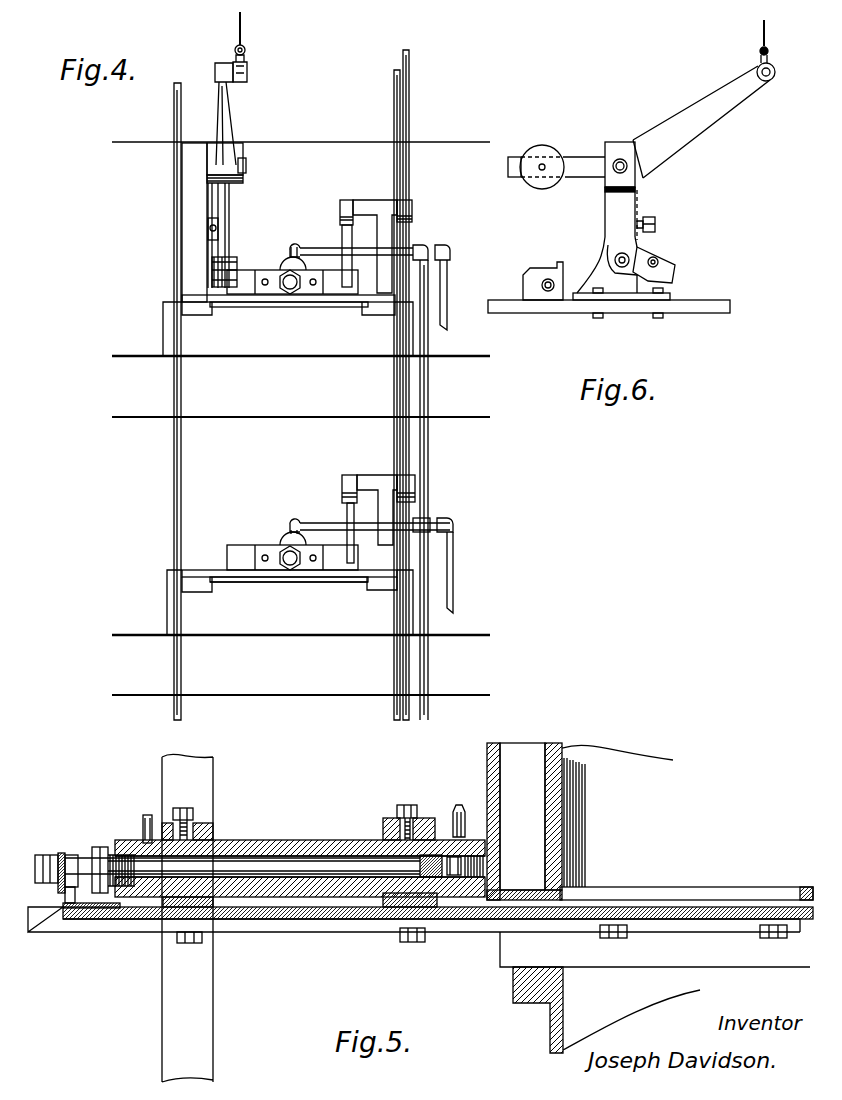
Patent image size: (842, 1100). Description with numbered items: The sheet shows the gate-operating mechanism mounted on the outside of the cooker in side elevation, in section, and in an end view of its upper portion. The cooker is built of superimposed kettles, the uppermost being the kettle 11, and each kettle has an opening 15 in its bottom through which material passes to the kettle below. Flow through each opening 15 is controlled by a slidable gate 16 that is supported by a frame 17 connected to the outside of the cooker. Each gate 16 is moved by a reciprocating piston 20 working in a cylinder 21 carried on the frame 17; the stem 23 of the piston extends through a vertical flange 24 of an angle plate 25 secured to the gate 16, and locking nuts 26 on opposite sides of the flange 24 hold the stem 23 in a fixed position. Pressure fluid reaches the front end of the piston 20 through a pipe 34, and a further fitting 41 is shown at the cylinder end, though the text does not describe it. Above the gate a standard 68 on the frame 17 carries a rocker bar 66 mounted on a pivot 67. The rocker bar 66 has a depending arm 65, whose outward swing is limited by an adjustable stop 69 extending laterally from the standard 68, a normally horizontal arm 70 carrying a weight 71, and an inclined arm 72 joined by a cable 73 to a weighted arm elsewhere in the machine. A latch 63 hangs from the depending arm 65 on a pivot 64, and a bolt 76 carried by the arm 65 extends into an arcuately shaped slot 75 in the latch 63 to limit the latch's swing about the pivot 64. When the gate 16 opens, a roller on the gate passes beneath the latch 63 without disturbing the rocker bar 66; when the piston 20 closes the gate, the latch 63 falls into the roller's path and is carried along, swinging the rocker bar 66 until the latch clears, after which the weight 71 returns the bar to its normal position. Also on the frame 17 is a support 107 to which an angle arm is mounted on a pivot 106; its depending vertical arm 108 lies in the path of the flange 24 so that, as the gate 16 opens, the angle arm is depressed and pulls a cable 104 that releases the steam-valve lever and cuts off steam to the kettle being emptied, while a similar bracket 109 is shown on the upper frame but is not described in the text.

In FIG. 5, the kettle 11 is at (556, 746).
In FIG. 5, the opening 15 is at (681, 888).
In FIG. 4, the slidable gate 16 is at (310, 583).
In FIG. 5, the slidable gate 16 is at (355, 908).
In FIG. 6, the slidable gate 16 is at (609, 309).
In FIG. 4, the frame 17 is at (192, 306).
In FIG. 5, the reciprocating piston 20 is at (400, 863).
In FIG. 5, the cylinder 21 is at (285, 840).
In FIG. 5, the piston stem 23 is at (80, 858).
In FIG. 4, the vertical flange 24 is at (263, 270).
In FIG. 5, the vertical flange 24 is at (64, 903).
In FIG. 6, the vertical flange 24 is at (550, 268).
In FIG. 5, the angle plate 25 is at (96, 918).
In FIG. 5, the locking nuts 26 is at (42, 853).
In FIG. 5, the pipe 34 is at (146, 818).
In FIG. 5, the pin 41 is at (462, 805).
In FIG. 6, the latch 63 is at (670, 268).
In FIG. 6, the pivot 64 is at (613, 260).
In FIG. 6, the depending arm 65 is at (600, 192).
In FIG. 6, the rocker bar 66 is at (656, 137).
In FIG. 6, the pivot 67 is at (620, 156).
In FIG. 4, the standard 68 is at (196, 208).
In FIG. 4, the adjustable stop 69 is at (208, 228).
In FIG. 6, the adjustable stop 69 is at (656, 223).
In FIG. 6, the horizontal arm 70 is at (512, 180).
In FIG. 6, the weight 71 is at (545, 148).
In FIG. 4, the inclined arm 72 is at (231, 122).
In FIG. 6, the inclined arm 72 is at (733, 68).
In FIG. 4, the cable 73 is at (243, 42).
In FIG. 6, the cable 73 is at (770, 36).
In FIG. 6, the arcuately shaped slot 75 is at (653, 282).
In FIG. 6, the bolt 76 is at (654, 255).
In FIG. 4, the cable 104 is at (414, 445).
In FIG. 4, the pivot 106 is at (416, 487).
In FIG. 4, the support 107 is at (386, 240).
In FIG. 4, the depending vertical arm 108 is at (350, 512).
In FIG. 4, the bracket 109 is at (343, 226).